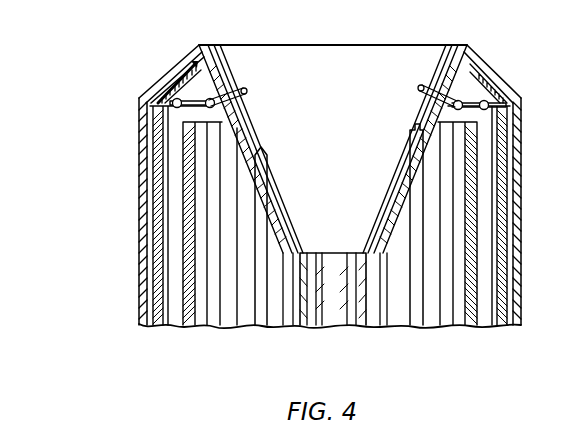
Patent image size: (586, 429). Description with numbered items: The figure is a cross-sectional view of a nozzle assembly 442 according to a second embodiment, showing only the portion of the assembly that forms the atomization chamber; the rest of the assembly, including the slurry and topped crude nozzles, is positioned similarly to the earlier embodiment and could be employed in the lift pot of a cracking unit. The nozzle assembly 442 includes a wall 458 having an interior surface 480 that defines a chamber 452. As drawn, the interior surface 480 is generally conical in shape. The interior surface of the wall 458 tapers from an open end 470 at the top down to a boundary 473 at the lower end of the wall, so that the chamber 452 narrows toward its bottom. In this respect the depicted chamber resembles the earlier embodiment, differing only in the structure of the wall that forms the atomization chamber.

The nozzle assembly 442 is at (102, 289).
The chamber 452 is at (379, 56).
The wall 458 is at (199, 73).
The open end 470 is at (199, 44).
The boundary 473 is at (297, 246).
The interior surface 480 is at (240, 122).